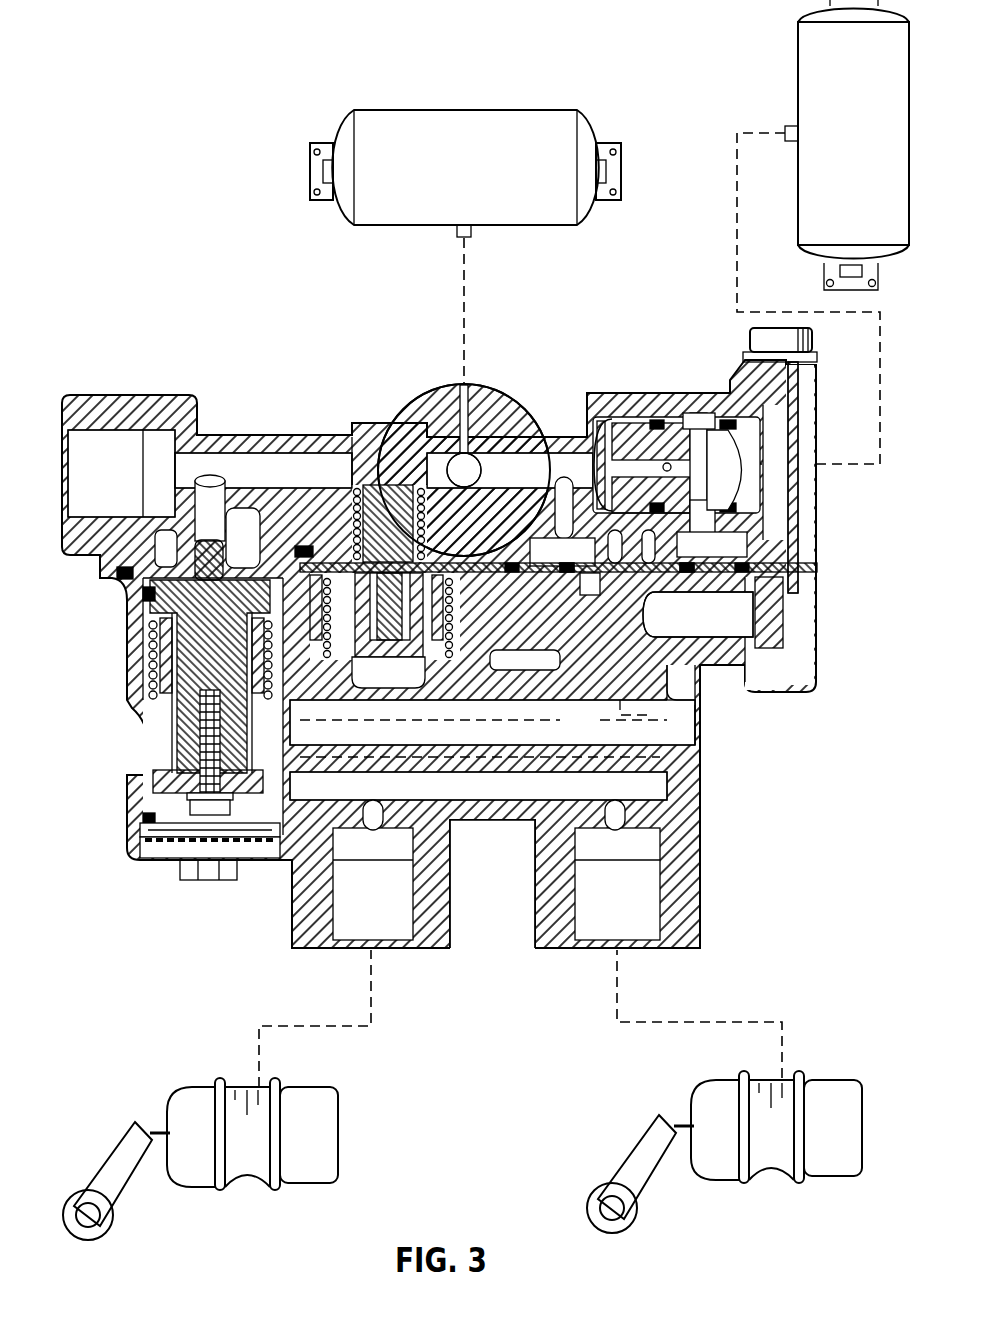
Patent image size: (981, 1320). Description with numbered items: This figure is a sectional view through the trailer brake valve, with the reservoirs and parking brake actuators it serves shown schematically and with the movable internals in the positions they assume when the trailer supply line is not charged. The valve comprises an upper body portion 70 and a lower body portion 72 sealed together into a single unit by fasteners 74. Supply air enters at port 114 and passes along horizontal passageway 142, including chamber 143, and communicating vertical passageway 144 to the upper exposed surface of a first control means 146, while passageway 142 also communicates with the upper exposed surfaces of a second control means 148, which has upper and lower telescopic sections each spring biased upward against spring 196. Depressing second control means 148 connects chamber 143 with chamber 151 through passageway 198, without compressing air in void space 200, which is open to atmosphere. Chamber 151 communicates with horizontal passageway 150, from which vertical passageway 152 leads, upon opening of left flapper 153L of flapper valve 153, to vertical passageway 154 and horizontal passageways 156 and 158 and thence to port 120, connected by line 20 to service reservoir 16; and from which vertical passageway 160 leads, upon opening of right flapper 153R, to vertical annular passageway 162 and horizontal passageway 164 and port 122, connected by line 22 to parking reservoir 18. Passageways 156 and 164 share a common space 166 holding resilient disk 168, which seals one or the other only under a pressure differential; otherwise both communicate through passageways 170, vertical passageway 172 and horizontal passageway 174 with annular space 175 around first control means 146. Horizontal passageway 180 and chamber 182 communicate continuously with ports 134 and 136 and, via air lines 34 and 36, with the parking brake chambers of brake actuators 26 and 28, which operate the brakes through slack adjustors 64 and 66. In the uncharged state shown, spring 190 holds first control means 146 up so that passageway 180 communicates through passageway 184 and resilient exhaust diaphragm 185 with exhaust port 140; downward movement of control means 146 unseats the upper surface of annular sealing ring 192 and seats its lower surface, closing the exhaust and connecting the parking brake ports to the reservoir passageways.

The service brake compressed air reservoir 16 is at (478, 174).
The parking brake compressed air reservoir 18 is at (860, 139).
The connector line 20 is at (464, 284).
The connector line 22 is at (737, 232).
The brake actuator 26 is at (318, 1095).
The brake actuator 28 is at (852, 1088).
The air line 34 is at (372, 996).
The air line 36 is at (617, 996).
The slack adjustor 64 is at (122, 1152).
The slack adjustor 66 is at (640, 1148).
The upper body portion 70 is at (122, 394).
The lower body portion 72 is at (125, 638).
The fasteners 74 is at (762, 342).
The port 114 is at (75, 435).
The port 120 is at (425, 395).
The port 122 is at (712, 460).
The port 134 is at (350, 925).
The port 136 is at (640, 922).
The port 140 is at (255, 868).
The horizontal passageway 142 is at (280, 455).
The chamber 143 is at (345, 440).
The vertical passageway 144 is at (213, 475).
The first control means 146 is at (125, 608).
The second control means 148 is at (368, 483).
The horizontal passageway 150 is at (500, 645).
The chamber 151 is at (480, 580).
The vertical passageway 152 is at (568, 580).
The flapper valve 153 is at (680, 580).
The left flapper 153L is at (590, 595).
The right flapper 153R is at (783, 625).
The vertical passageway 154 is at (562, 478).
The horizontal passageway 156 is at (524, 455).
The horizontal passageway 158 is at (450, 462).
The vertical passageway 160 is at (785, 600).
The vertical annular passageway 162 is at (790, 470).
The horizontal passageway 164 is at (662, 424).
The commonly-shared passageway 166 is at (600, 420).
The resilient sealing diaphragm 168 is at (620, 424).
The communicating passageways 170 is at (640, 424).
The vertical passageway 172 is at (670, 715).
The horizontal passageway 174 is at (685, 775).
The annular passageway 175 is at (172, 735).
The horizontal passageway 180 is at (530, 800).
The chamber 182 is at (187, 796).
The passageway 184 is at (185, 832).
The resilient exhaust diaphragm 185 is at (200, 850).
The spring 190 is at (148, 660).
The annular sealing ring 192 is at (155, 780).
The spring 196 is at (462, 690).
The passageway 198 is at (352, 437).
The void space 200 is at (398, 690).